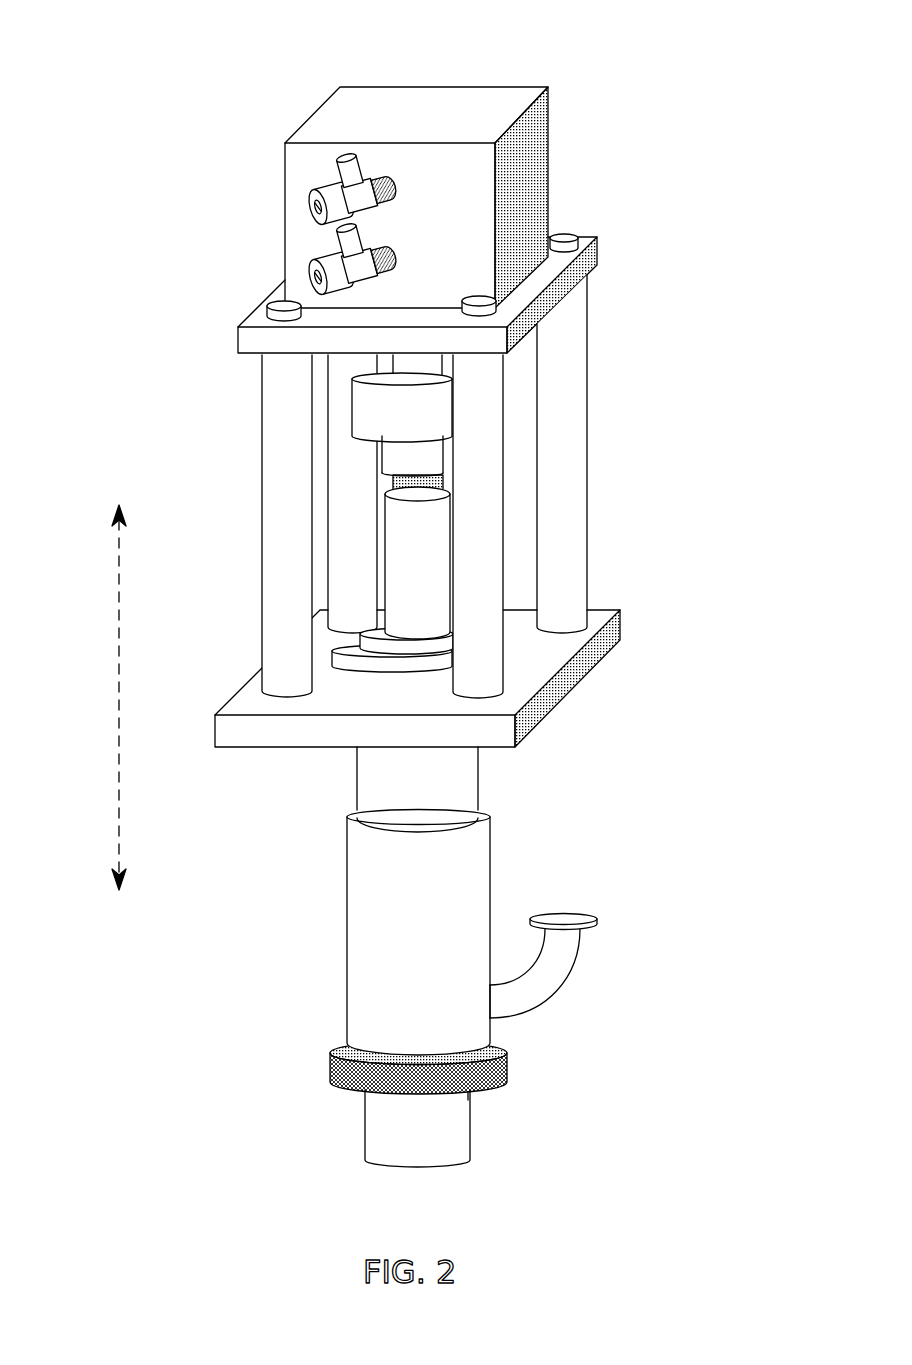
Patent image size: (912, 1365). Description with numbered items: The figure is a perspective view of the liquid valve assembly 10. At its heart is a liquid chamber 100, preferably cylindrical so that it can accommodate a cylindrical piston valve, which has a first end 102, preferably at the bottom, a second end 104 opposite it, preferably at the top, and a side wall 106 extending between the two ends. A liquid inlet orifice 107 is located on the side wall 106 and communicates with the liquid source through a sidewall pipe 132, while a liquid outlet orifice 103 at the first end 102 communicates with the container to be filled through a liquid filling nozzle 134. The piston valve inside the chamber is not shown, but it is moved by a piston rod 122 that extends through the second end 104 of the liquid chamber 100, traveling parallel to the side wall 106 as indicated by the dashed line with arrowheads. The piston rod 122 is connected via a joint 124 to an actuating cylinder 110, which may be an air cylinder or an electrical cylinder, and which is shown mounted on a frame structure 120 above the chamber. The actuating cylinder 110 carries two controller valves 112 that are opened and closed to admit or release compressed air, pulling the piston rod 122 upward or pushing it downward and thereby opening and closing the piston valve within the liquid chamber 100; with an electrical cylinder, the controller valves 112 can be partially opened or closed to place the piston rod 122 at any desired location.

The liquid valve assembly 10 is at (417, 627).
The actuating cylinder 110 is at (608, 86).
The controller valves 112 is at (310, 207).
The actuator assembly 120 is at (464, 490).
The joint 124 is at (377, 413).
The piston rod 122 is at (415, 569).
The second end 104 is at (500, 808).
The liquid chamber 100 is at (467, 1028).
The side wall 106 is at (425, 885).
The sidewall pipe 132 is at (567, 952).
The liquid inlet orifice 107 is at (490, 1000).
The first end 102 is at (511, 1090).
The liquid outlet orifice 103 is at (470, 1098).
The liquid filling nozzle 134 is at (418, 1152).